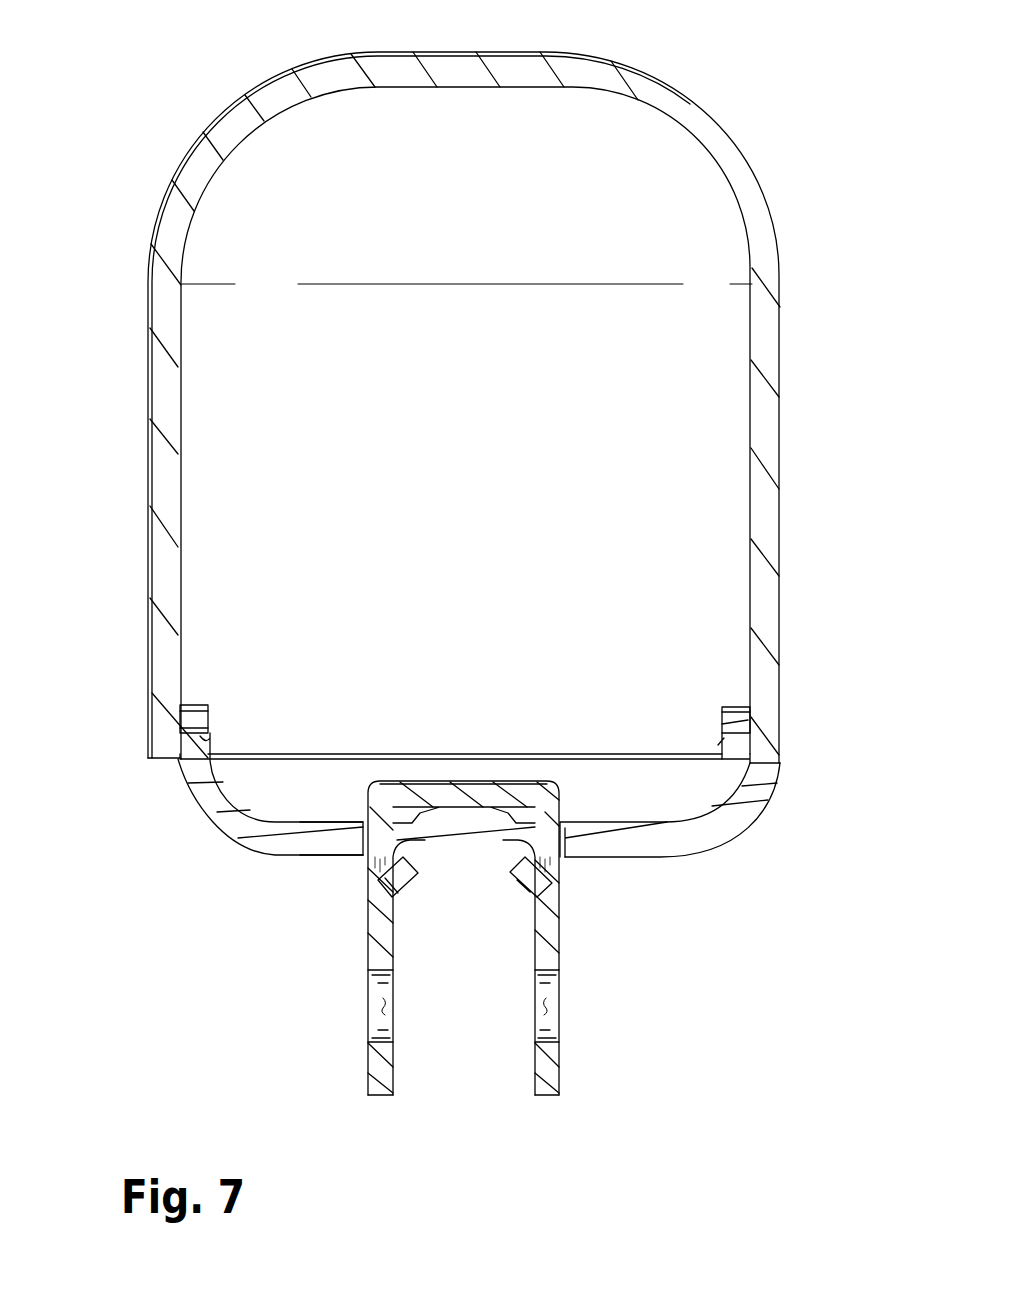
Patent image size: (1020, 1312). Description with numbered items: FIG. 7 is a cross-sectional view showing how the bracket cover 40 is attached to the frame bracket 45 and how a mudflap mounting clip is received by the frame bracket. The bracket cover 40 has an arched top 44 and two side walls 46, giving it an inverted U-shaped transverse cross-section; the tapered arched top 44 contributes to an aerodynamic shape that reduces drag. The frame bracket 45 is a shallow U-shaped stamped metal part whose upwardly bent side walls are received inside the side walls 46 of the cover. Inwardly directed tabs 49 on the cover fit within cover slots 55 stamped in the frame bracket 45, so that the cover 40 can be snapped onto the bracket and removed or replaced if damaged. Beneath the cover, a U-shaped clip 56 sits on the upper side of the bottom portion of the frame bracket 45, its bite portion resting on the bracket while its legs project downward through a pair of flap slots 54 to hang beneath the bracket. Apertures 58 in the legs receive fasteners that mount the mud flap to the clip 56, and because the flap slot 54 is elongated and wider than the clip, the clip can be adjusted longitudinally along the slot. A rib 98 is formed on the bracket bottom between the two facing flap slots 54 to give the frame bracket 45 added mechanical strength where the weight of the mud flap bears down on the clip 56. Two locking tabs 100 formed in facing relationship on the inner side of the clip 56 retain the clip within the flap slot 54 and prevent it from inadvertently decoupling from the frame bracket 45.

The bracket cover 40 is at (781, 625).
The arched top 44 is at (498, 52).
The side walls 46 is at (148, 452).
The frame bracket 45 is at (684, 847).
The inwardly directed tabs 49 is at (213, 752).
The cover slots 55 is at (212, 737).
The flap slot 54 is at (363, 817).
The U-shaped clip 56 is at (368, 953).
The apertures 58 is at (378, 1008).
The rib 98 is at (477, 813).
The locking tabs 100 is at (523, 875).